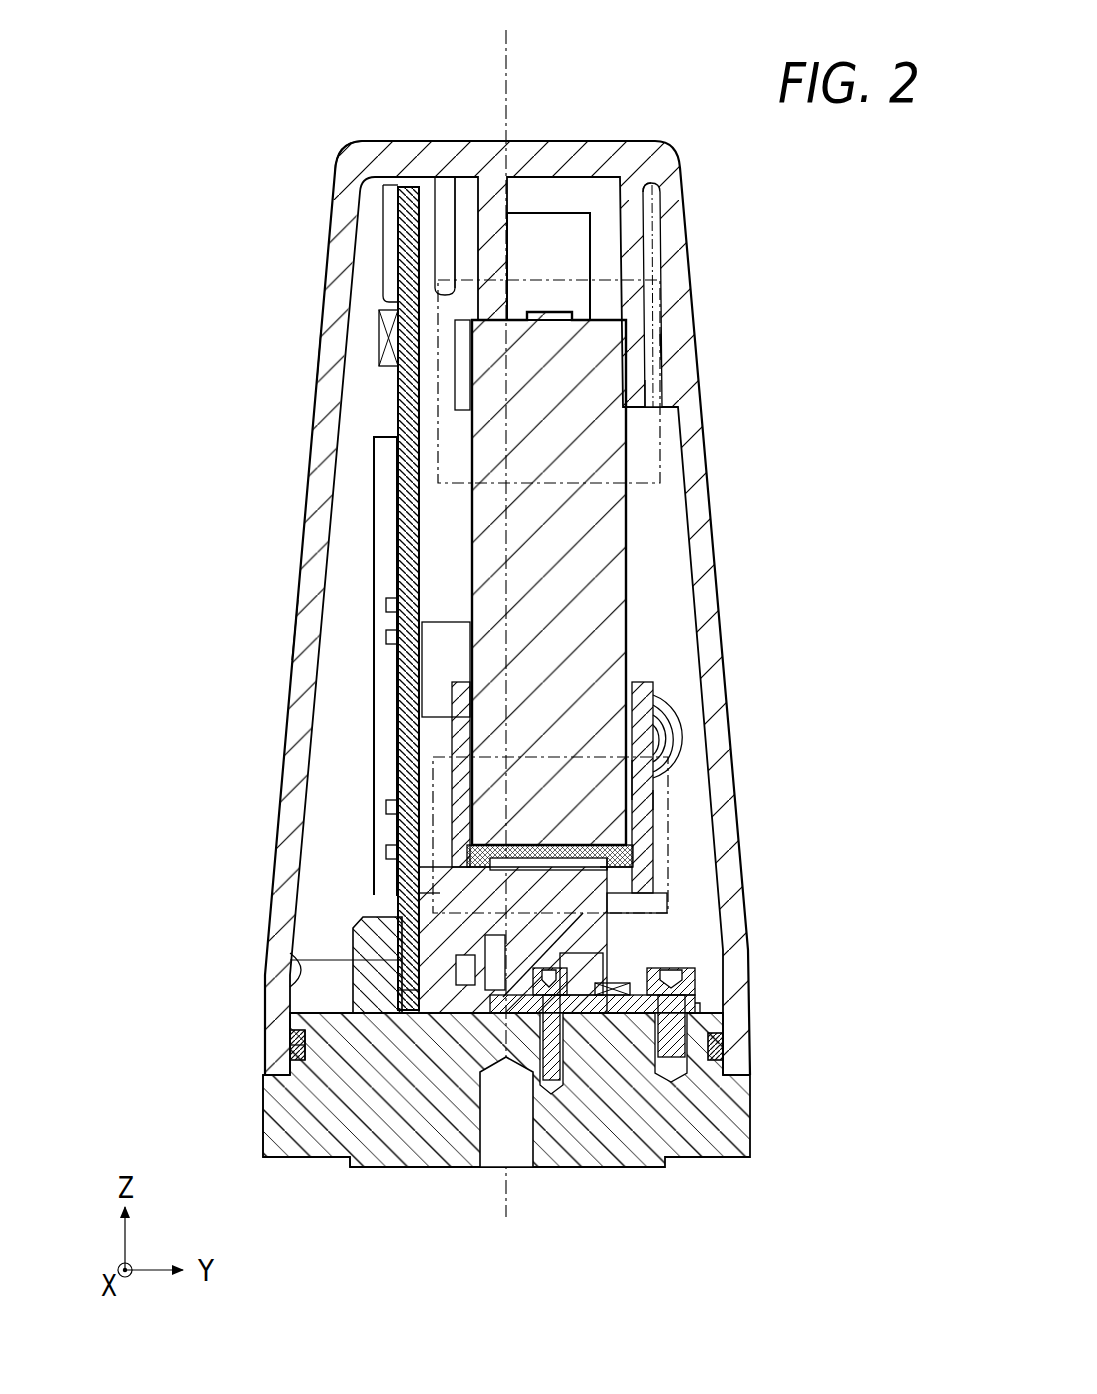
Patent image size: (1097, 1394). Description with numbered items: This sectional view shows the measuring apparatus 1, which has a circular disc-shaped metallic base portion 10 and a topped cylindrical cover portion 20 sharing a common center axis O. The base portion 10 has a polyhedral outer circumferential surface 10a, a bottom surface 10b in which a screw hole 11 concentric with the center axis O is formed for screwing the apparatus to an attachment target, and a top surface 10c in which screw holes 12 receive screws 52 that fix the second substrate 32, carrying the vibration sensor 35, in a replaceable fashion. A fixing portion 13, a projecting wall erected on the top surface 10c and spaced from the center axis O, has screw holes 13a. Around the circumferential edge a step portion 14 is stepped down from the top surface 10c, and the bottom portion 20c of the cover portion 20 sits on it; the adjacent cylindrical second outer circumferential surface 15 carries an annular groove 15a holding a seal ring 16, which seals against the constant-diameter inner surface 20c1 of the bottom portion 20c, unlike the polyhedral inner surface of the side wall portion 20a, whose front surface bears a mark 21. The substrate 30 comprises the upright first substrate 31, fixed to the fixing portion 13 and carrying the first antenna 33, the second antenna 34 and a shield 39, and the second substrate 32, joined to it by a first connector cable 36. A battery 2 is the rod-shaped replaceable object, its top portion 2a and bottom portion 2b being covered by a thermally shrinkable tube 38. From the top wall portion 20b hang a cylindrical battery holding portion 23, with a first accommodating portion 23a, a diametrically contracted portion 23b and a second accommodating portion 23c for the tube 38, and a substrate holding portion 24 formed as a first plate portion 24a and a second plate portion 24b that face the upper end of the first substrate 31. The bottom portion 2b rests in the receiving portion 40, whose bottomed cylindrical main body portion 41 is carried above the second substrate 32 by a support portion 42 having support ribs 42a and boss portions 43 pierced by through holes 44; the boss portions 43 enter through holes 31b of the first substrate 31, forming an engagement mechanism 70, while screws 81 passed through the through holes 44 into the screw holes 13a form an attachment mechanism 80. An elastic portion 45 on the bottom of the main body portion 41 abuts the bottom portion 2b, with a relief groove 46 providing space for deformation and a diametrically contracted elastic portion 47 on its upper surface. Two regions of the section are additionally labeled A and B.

The measuring apparatus 1 is at (260, 116).
The battery 2 is at (630, 557).
The top portion of the battery 2a is at (546, 308).
The bottom portion of the battery 2b is at (667, 905).
The base portion 10 is at (620, 1166).
The outer circumferential surface 10a is at (260, 1122).
The bottom surface 10b is at (405, 1170).
The top surface 10c is at (706, 1006).
The screw hole 11 is at (503, 1100).
The screw holes 12 is at (548, 1092).
The fixing portion 13 is at (372, 928).
The screw holes 13a is at (380, 962).
The step portion 14 is at (290, 1062).
The second outer circumferential surface 15 is at (296, 1032).
The annular groove 15a is at (296, 1052).
The seal ring 16 is at (304, 1040).
The cover portion 20 is at (302, 577).
The side wall portion 20a is at (284, 634).
The top wall portion 20b is at (382, 144).
The bottom portion 20c is at (262, 984).
The inner surface 20c1 is at (340, 952).
The mark 21 is at (315, 368).
The battery holding portion 23 is at (652, 362).
The first accommodating portion 23a is at (646, 402).
The diametrically contracted portion 23b is at (650, 335).
The second accommodating portion 23c is at (620, 233).
The substrate holding portion 24 is at (380, 237).
The first plate portion 24a is at (405, 190).
The second plate portion 24b is at (460, 250).
The substrate 30 is at (397, 480).
The first substrate 31 is at (295, 598).
The through holes 31b is at (408, 1012).
The second substrate 32 is at (592, 1114).
The first antenna 33 is at (396, 318).
The second antenna 34 is at (379, 335).
The sensor 35 is at (600, 968).
The first connector cable 36 is at (684, 730).
The thermally shrinkable tube 38 is at (628, 447).
The shield 39 is at (382, 722).
The receiving portion 40 is at (656, 805).
The main body portion 41 is at (646, 786).
The support portion 42 is at (450, 868).
The support ribs 42a is at (440, 898).
The boss portions 43 is at (380, 1000).
The through holes 44 is at (440, 1000).
The elastic portion 45 is at (650, 860).
The relief groove 46 is at (650, 878).
The diametrically contracted elastic portion 47 is at (654, 800).
The screws 52 is at (603, 955).
The engagement mechanism 70 is at (415, 985).
The attachment mechanism 80 is at (462, 988).
The screws 81 is at (492, 992).
The region A is at (662, 272).
The region B is at (672, 835).
The center axis O is at (504, 62).